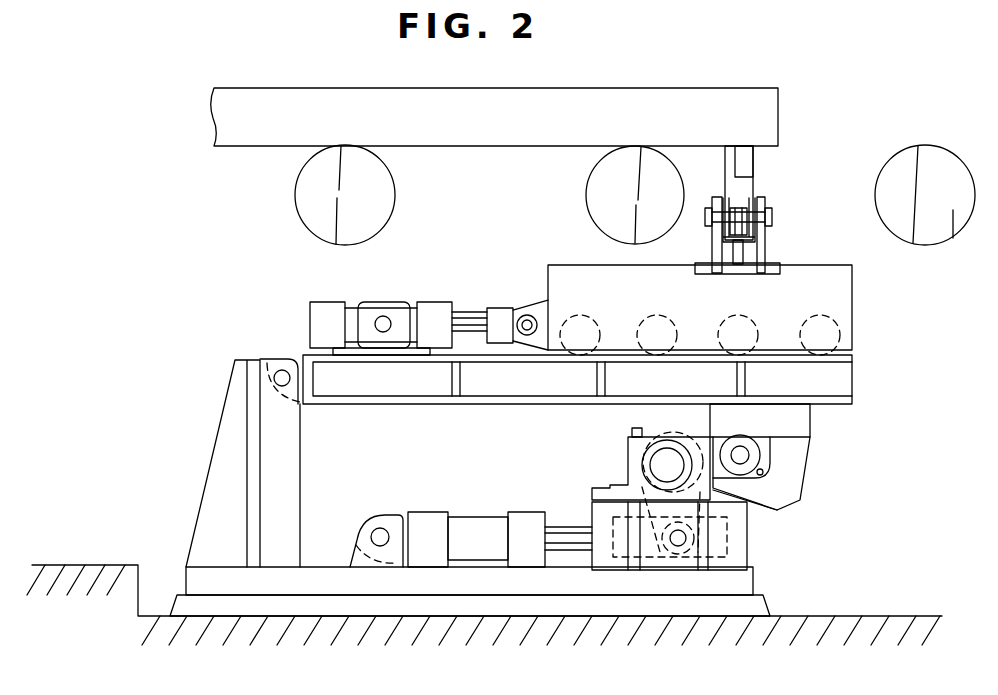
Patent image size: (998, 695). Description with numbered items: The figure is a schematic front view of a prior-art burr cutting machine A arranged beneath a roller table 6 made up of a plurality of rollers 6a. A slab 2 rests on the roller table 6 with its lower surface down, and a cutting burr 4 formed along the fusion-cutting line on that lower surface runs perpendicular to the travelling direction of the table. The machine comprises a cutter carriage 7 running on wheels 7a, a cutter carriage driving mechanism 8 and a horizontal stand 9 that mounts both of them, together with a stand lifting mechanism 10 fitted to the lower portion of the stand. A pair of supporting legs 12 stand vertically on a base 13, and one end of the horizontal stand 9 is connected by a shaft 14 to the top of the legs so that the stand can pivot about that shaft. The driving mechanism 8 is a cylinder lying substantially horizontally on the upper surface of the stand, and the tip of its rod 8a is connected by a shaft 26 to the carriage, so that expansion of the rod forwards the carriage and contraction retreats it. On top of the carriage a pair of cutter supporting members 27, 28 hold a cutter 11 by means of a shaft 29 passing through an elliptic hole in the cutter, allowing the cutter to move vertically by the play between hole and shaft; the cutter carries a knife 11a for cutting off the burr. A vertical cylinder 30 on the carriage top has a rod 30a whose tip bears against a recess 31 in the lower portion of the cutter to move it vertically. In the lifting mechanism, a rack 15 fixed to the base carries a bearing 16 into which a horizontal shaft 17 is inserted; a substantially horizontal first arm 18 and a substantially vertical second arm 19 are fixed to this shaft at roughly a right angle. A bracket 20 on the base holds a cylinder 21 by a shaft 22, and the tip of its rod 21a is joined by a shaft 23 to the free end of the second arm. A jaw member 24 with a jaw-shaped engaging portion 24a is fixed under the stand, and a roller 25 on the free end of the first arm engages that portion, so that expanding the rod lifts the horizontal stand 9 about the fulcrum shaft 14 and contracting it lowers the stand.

The slab 2 is at (690, 88).
The roller table 6 is at (613, 137).
The rollers 6a is at (310, 182).
The cutting burr 4 is at (755, 158).
The knife 11a is at (753, 162).
The cutter 11 is at (751, 214).
The cutter supporting member 27 is at (767, 243).
The cutter supporting member 28 is at (712, 235).
The shaft 29 is at (773, 218).
The cylinder 30 is at (733, 258).
The rod 30a is at (738, 212).
The recess 31 is at (767, 212).
The cutter carriage 7 is at (852, 290).
The wheels 7a is at (852, 345).
The horizontal stand 9 is at (852, 385).
The cutter carriage driving mechanism 8 is at (415, 300).
The rod 8a is at (470, 310).
The shaft 26 is at (527, 322).
The burr cutting machine A is at (305, 282).
The supporting leg 12 is at (222, 425).
The shaft 14 is at (282, 370).
The stand lifting mechanism 10 is at (580, 470).
The jaw member 24 is at (810, 450).
The jaw-shaped engaging portion 24a is at (778, 506).
The roller 25 is at (757, 452).
The bearing 16 is at (628, 455).
The shaft 17 is at (662, 455).
The first arm 18 is at (702, 445).
The second arm 19 is at (727, 525).
The rack 15 is at (745, 562).
The shaft 23 is at (678, 546).
The cylinder 21 is at (480, 512).
The rod 21a is at (570, 527).
The bracket 20 is at (352, 560).
The shaft 22 is at (380, 530).
The base 13 is at (405, 614).